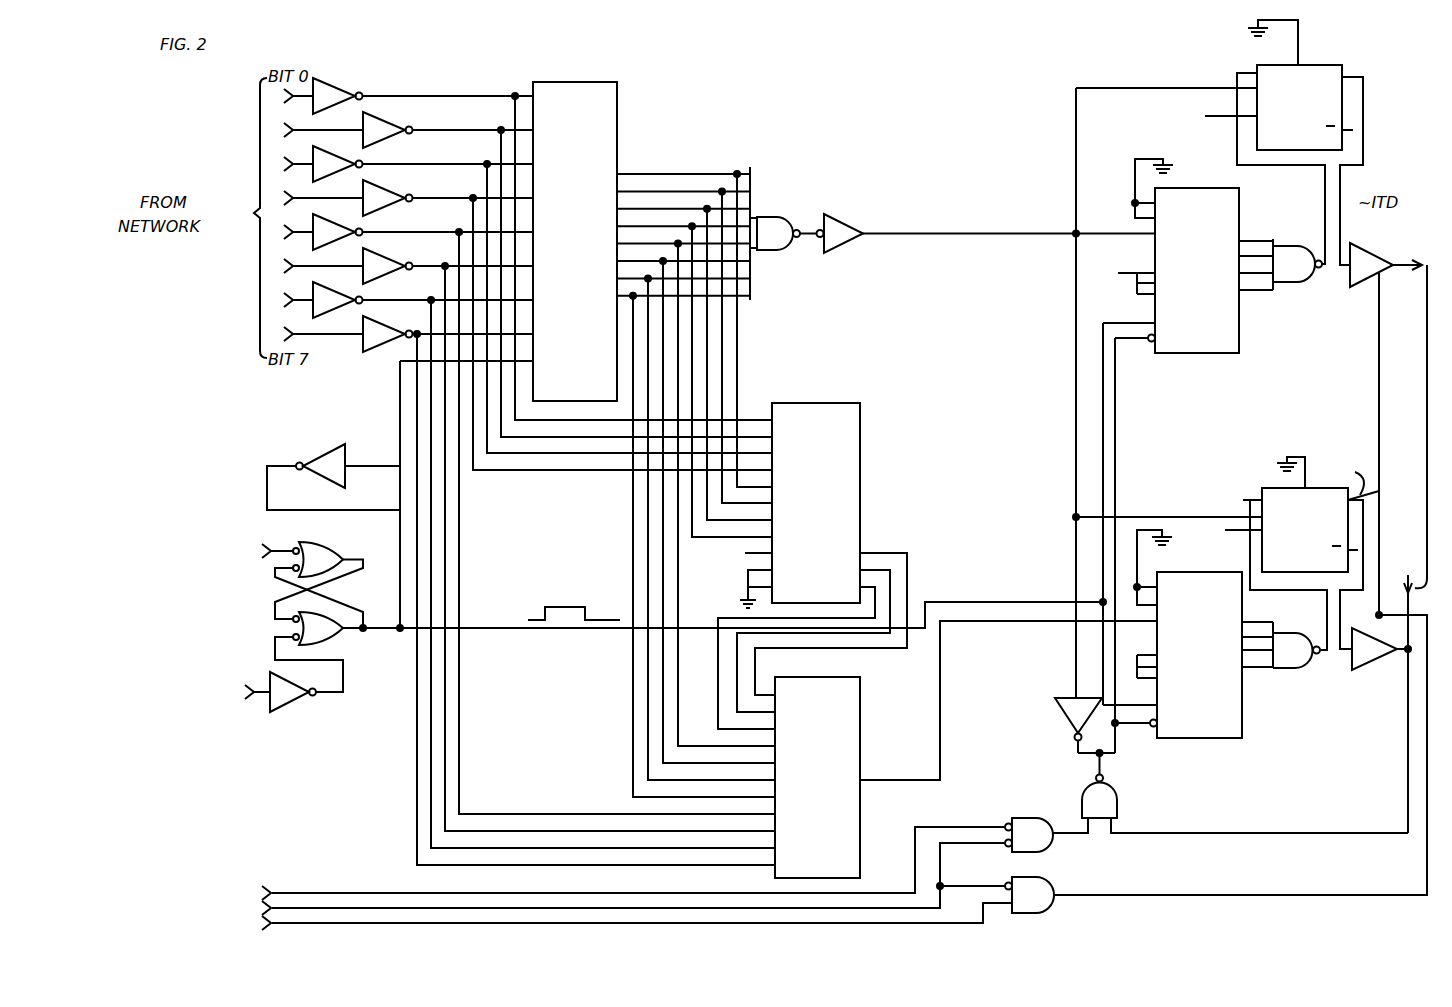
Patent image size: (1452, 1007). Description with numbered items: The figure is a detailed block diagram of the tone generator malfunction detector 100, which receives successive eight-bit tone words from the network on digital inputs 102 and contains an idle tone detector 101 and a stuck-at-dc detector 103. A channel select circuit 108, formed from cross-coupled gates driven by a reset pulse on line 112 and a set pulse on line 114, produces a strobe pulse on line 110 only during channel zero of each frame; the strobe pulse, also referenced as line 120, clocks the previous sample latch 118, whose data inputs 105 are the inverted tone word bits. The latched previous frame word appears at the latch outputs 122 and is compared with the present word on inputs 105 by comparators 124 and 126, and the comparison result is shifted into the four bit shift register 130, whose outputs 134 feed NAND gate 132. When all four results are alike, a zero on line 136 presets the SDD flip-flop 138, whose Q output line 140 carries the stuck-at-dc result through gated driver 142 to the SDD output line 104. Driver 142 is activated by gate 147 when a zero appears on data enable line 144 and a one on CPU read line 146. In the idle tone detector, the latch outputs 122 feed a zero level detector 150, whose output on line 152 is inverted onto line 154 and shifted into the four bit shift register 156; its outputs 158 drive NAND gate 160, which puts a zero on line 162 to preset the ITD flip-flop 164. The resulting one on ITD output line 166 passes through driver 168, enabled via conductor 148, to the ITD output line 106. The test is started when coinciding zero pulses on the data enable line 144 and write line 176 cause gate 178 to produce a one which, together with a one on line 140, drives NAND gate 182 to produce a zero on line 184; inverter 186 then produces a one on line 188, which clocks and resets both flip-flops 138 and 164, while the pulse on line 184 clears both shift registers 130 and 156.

The tone generator malfunction detector 100 is at (880, 150).
The idle tone detector 101 is at (1380, 71).
The digital inputs 102 is at (250, 90).
The stuck-at-dc detector 103 is at (1391, 526).
The SDD output line 104 is at (1410, 568).
The data inputs 105 is at (433, 94).
The ITD output line 106 is at (1424, 262).
The channel select circuit 108 is at (325, 720).
The strobe pulse line 110 is at (484, 624).
The reset pulse line 112 is at (250, 702).
The set pulse line 114 is at (278, 550).
The previous sample latch 118 is at (570, 148).
The strobe pulse line 120 is at (372, 440).
The latch outputs 122 is at (704, 165).
The comparator 124 is at (835, 402).
The comparator 126 is at (935, 700).
The four bit shift register 130 is at (1243, 722).
The NAND gate 132 is at (1296, 670).
The shift register outputs 134 is at (1258, 623).
The preset line 136 is at (1305, 592).
The SDD flip-flop 138 is at (1264, 487).
The Q output line 140 is at (1382, 487).
The gated driver 142 is at (1356, 700).
The data enable line 144 is at (290, 893).
The CPU read line 146 is at (390, 905).
The gate 147 is at (1050, 886).
The conductor 148 is at (1200, 890).
The zero level detector 150 is at (772, 217).
The zero level detector output line 152 is at (822, 226).
The inverted zero level line 154 is at (884, 238).
The four bit shift register 156 is at (1200, 354).
The shift register outputs 158 is at (1250, 240).
The NAND gate 160 is at (1292, 283).
The preset line 162 is at (1268, 160).
The ITD flip-flop 164 is at (1320, 66).
The ITD output line 166 is at (1365, 110).
The driver 168 is at (1378, 256).
The write line 176 is at (352, 890).
The gate 178 is at (1032, 815).
The NAND gate 182 is at (1124, 784).
The start test line 184 is at (1118, 478).
The inverter 186 is at (1055, 720).
The flip-flop clock line 188 is at (1075, 668).